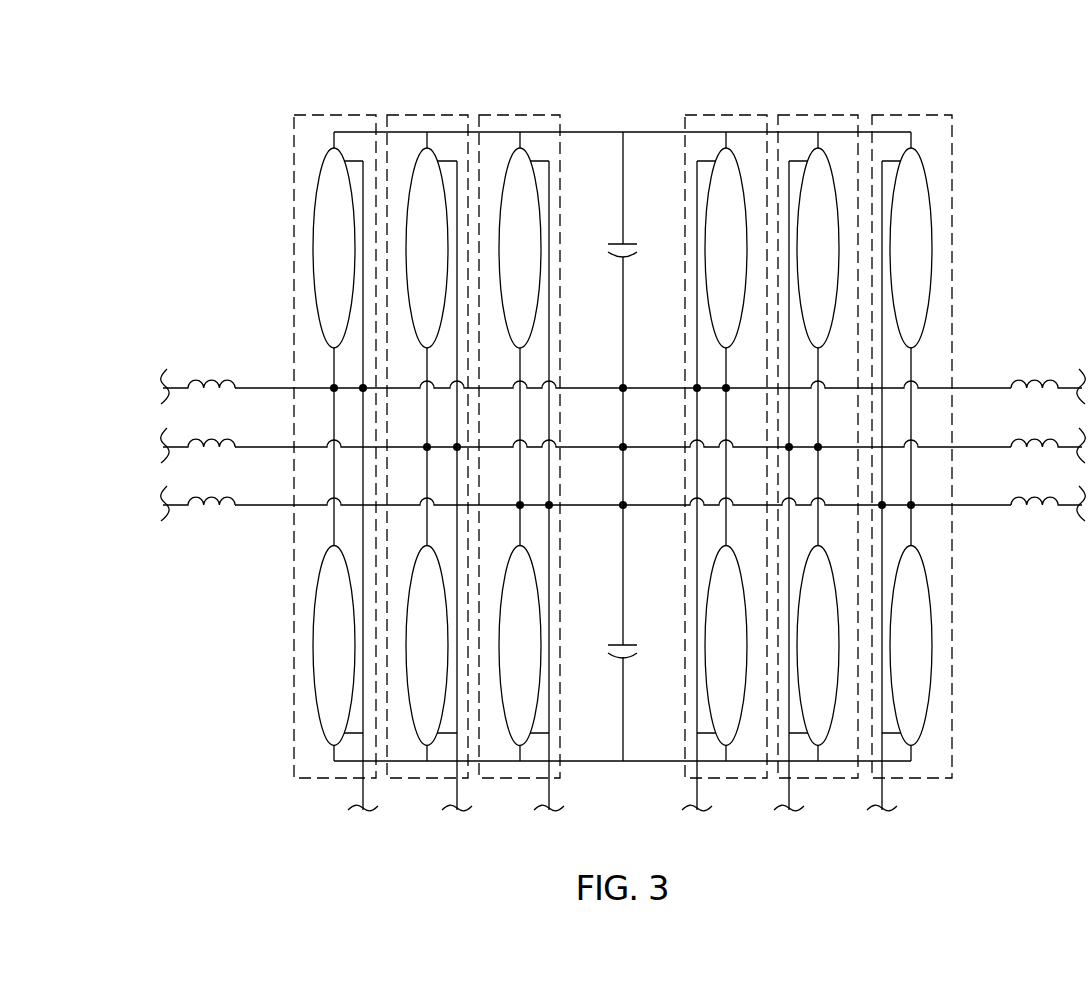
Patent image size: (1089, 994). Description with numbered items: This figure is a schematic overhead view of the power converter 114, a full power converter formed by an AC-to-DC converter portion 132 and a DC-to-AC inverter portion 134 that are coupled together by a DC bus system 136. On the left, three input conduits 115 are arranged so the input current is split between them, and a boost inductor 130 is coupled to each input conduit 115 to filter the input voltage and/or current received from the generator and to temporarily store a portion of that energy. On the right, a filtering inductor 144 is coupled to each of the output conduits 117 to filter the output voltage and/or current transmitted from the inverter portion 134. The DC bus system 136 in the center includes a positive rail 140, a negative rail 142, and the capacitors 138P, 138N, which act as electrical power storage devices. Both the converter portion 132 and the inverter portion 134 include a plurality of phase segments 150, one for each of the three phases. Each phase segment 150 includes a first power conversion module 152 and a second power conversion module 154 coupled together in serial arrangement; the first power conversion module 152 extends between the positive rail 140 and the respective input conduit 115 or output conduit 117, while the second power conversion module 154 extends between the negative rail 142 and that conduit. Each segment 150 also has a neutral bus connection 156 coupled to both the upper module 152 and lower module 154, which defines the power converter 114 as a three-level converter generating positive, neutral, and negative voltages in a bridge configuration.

The power converter 114 is at (217, 88).
The input conduits 115 is at (263, 383).
The output conduits 117 is at (984, 383).
The boost inductor 130 is at (232, 377).
The AC-to-DC converter portion 132 is at (403, 104).
The DC-to-AC inverter portion 134 is at (850, 92).
The DC bus system 136 is at (674, 419).
The capacitor 138P is at (628, 240).
The capacitor 138N is at (628, 642).
The positive rail 140 is at (603, 132).
The negative rail 142 is at (597, 765).
The filtering inductor 144 is at (1016, 379).
The phase segment 150 is at (290, 573).
The first power conversion module 152 is at (327, 223).
The second power conversion module 154 is at (327, 654).
The neutral bus connection 156 is at (612, 380).